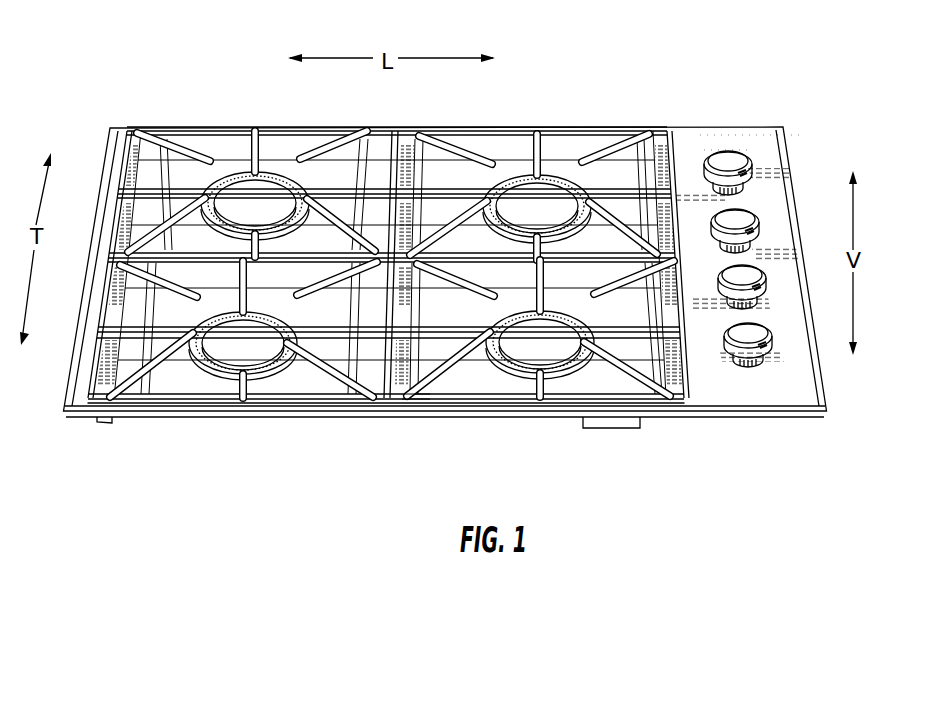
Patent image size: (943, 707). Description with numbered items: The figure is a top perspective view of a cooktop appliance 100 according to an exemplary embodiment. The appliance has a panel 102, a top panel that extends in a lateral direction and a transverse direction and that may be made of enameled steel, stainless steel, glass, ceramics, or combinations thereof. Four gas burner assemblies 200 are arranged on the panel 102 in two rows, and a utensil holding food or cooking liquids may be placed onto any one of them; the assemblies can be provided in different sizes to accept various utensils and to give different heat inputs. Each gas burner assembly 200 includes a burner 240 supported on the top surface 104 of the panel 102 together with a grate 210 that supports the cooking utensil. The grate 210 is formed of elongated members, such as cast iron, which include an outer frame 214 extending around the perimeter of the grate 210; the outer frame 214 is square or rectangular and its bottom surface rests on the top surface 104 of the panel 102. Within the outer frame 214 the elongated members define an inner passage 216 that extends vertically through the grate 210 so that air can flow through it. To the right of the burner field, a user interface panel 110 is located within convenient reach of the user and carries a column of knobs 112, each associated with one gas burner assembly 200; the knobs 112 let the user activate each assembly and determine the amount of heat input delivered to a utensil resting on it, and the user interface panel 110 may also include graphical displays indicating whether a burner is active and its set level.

The cooktop appliance 100 is at (742, 58).
The panel 102 is at (100, 247).
The top surface 104 is at (752, 395).
The user interface panel 110 is at (716, 138).
The knobs 112 is at (758, 218).
The gas burner assemblies 200 is at (394, 130).
The grate 210 is at (637, 390).
The outer frame 214 is at (435, 395).
The inner passage 216 is at (478, 382).
The burner 240 is at (567, 390).